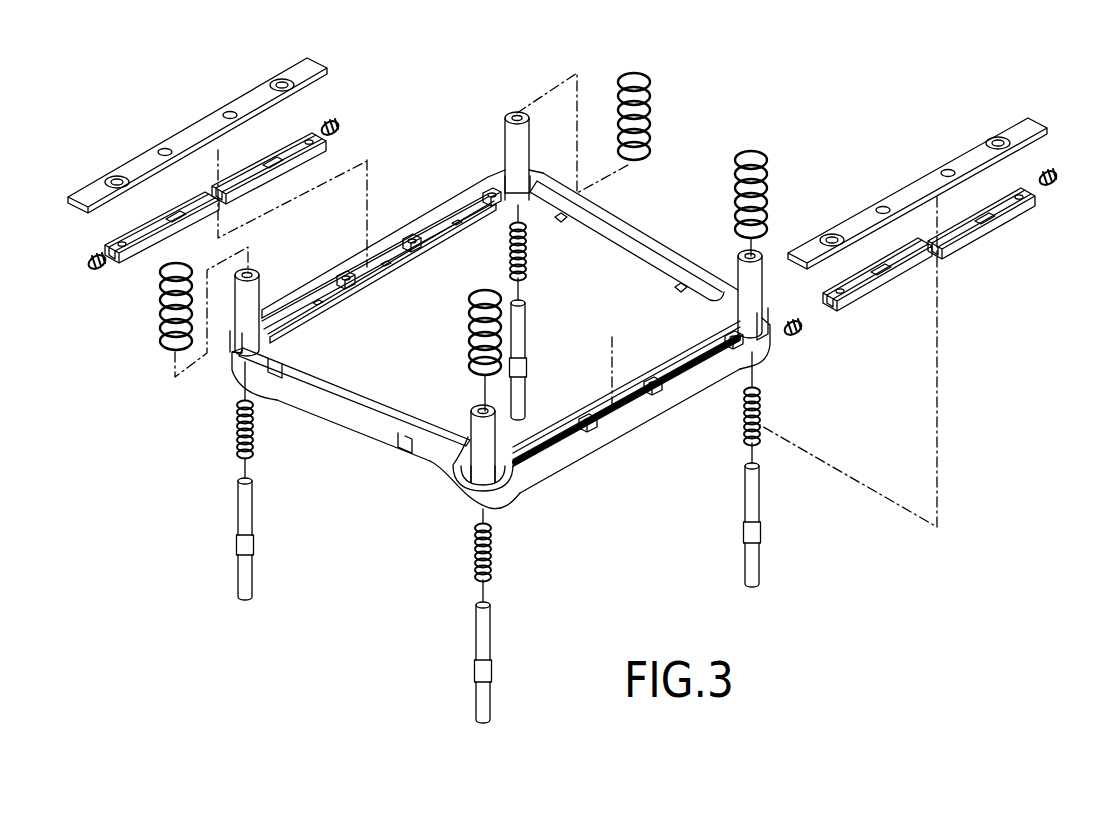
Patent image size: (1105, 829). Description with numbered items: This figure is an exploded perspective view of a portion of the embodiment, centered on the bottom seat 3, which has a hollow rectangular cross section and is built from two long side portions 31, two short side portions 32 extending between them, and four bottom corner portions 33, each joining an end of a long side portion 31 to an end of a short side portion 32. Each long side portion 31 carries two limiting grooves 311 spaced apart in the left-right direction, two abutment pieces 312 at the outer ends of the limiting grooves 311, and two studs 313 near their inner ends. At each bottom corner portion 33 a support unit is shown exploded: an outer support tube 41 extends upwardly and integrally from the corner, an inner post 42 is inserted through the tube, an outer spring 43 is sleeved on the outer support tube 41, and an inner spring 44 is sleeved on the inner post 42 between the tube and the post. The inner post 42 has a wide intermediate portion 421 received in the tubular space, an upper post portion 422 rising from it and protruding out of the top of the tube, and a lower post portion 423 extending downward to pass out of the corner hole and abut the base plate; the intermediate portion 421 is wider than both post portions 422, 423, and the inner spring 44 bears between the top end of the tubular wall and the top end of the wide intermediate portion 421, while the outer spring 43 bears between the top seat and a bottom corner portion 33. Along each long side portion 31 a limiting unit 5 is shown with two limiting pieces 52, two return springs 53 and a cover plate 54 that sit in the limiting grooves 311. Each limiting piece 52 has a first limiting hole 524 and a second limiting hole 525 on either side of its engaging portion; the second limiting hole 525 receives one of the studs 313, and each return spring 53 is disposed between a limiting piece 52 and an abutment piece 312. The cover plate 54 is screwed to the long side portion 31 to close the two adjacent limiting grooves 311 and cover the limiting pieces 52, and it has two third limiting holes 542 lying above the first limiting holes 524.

The bottom seat 3 is at (380, 478).
The long side portion 31 is at (378, 216).
The limiting groove 311 is at (330, 283).
The abutment piece 312 is at (310, 292).
The stud 313 is at (350, 270).
The short side portion 32 is at (655, 253).
The bottom corner portion 33 is at (236, 365).
The outer support tube 41 is at (512, 140).
The inner post 42 is at (256, 572).
The wide intermediate portion 421 is at (247, 548).
The upper post portion 422 is at (240, 505).
The lower post portion 423 is at (238, 590).
The outer spring 43 is at (170, 300).
The inner spring 44 is at (252, 440).
The limiting unit 5 is at (147, 140).
The limiting piece 52 is at (275, 157).
The first limiting hole 524 is at (298, 133).
The second limiting hole 525 is at (243, 168).
The return spring 53 is at (345, 125).
The cover plate 54 is at (203, 130).
The third limiting hole 542 is at (282, 87).